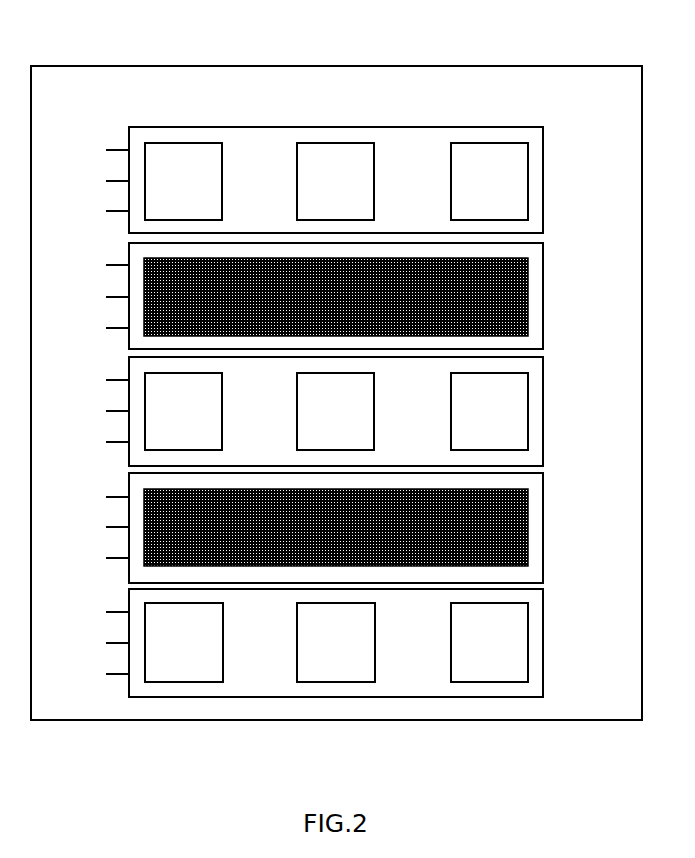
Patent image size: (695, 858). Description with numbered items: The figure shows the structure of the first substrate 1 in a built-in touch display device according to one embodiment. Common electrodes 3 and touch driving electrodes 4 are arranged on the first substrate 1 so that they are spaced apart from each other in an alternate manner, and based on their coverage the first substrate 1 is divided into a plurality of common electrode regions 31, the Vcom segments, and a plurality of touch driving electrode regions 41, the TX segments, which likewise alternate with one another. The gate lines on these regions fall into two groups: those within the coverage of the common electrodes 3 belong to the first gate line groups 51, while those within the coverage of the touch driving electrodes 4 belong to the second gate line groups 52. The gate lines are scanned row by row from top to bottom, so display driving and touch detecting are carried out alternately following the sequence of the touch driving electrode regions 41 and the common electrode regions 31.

The first substrate 1 is at (489, 65).
The common electrodes 3 is at (528, 558).
The common electrode regions 31 is at (545, 278).
The touch driving electrodes 4 is at (528, 675).
The touch driving electrode regions 41 is at (545, 140).
The first gate line groups 51 is at (116, 265).
The second gate line groups 52 is at (116, 150).